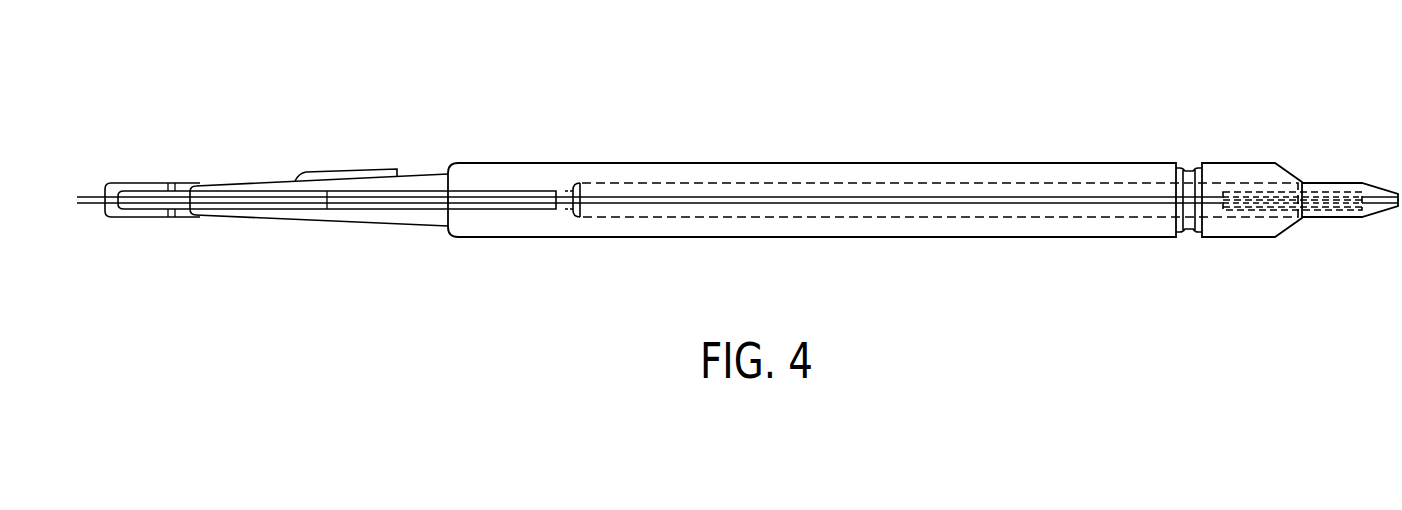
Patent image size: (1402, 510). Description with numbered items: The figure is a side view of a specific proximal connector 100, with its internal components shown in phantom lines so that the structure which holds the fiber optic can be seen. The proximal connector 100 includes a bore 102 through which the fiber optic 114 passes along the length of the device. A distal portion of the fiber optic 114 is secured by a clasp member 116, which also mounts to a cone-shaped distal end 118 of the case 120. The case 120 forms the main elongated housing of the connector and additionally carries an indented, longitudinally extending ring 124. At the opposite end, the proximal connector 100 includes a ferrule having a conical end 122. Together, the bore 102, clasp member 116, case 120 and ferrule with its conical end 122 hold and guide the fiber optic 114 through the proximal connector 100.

The proximal connector 100 is at (737, 155).
The bore 102 is at (882, 210).
The fiber optic 114 is at (1037, 198).
The clasp member 116 is at (249, 163).
The cone-shaped distal end 118 is at (420, 177).
The case 120 is at (517, 173).
The conical end 122 is at (1322, 163).
The indented, longitudinally extending ring 124 is at (1192, 147).